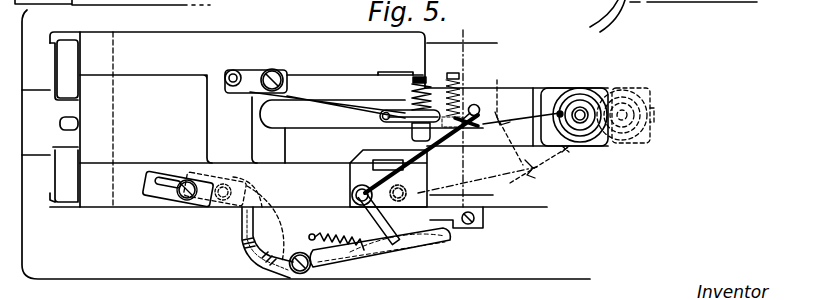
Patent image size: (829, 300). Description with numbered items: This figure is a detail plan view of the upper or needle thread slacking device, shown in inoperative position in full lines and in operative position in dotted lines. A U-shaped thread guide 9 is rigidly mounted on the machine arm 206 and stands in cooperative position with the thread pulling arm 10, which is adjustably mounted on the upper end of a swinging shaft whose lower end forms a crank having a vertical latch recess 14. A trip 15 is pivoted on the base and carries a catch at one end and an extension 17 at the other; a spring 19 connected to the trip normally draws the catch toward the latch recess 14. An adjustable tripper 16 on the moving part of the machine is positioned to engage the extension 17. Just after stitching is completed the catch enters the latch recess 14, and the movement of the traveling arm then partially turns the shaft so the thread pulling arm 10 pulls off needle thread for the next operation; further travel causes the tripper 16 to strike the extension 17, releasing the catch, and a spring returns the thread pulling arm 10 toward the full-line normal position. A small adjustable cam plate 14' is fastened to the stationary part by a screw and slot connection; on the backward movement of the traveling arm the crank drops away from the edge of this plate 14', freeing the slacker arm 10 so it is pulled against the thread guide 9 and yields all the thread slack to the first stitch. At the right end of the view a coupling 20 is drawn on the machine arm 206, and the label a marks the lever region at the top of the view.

The lever a is at (233, 72).
The U-shaped thread guide 9 is at (459, 112).
The thread pulling arm 10 is at (460, 186).
The coupling head 20 is at (581, 114).
The machine arm 206 is at (582, 135).
The adjustable tripper 16 is at (202, 210).
The extension 17 is at (247, 217).
The spring 19 is at (360, 211).
The latch recess 14 is at (414, 192).
The trip 15 is at (372, 250).
The cam plate 14' is at (461, 230).